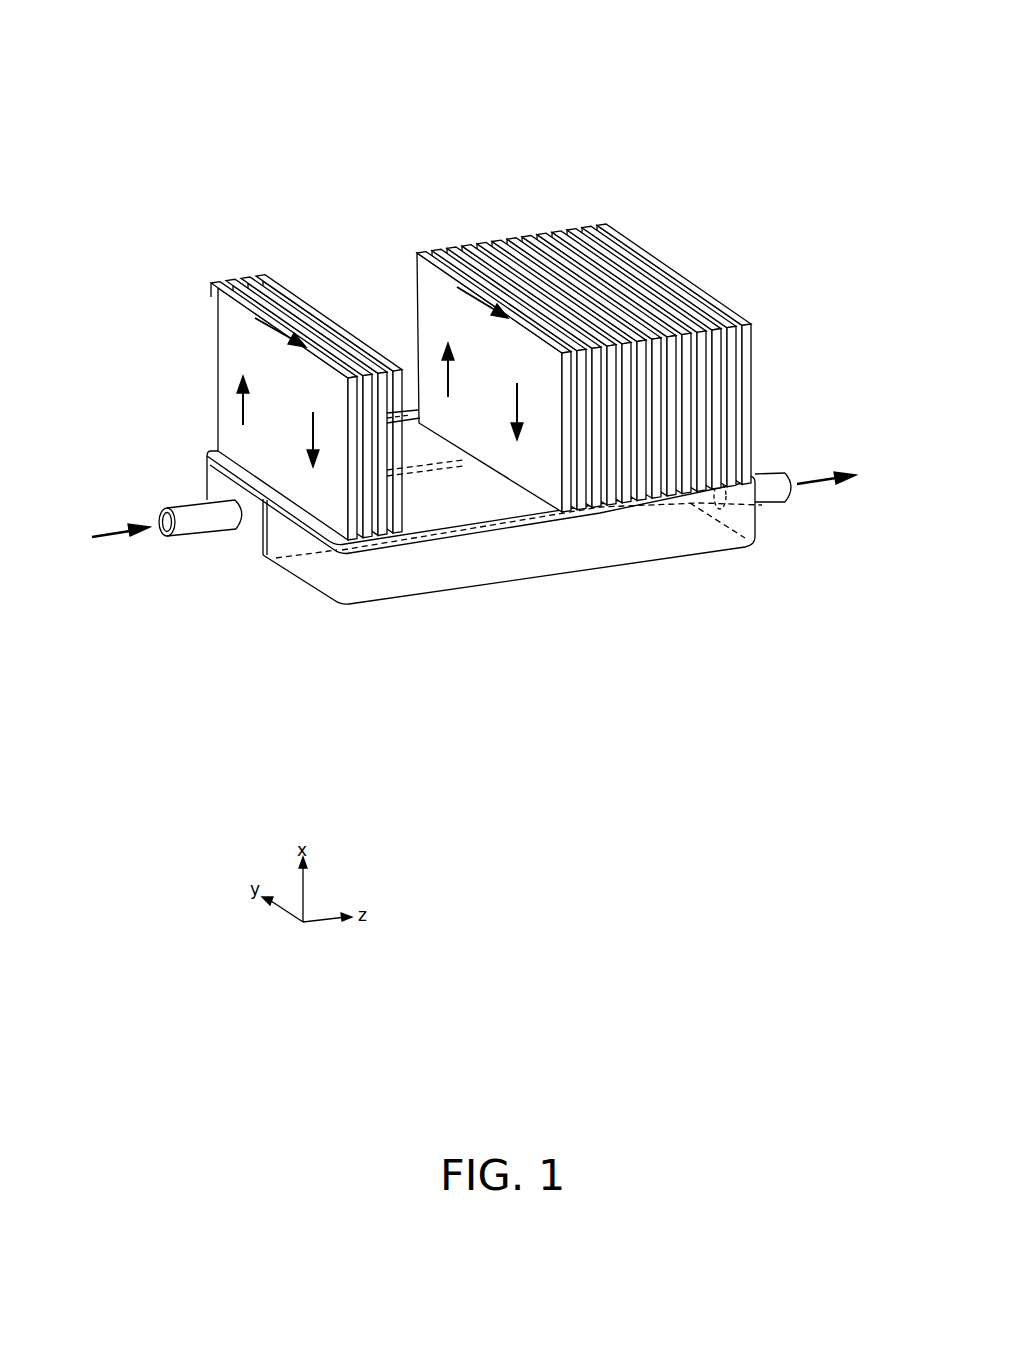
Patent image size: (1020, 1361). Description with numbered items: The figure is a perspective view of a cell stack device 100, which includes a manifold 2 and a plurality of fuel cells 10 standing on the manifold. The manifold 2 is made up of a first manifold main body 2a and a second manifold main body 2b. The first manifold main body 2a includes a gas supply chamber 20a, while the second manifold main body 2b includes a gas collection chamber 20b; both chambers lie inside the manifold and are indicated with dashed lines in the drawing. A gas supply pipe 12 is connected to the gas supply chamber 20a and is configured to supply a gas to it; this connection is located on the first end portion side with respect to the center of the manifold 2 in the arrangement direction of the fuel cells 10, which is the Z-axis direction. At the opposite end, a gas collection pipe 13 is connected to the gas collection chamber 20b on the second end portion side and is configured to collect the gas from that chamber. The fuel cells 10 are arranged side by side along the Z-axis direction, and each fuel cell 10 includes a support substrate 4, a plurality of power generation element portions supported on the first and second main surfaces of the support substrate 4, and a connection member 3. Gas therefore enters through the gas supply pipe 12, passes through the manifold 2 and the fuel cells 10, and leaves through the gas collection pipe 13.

The cell stack device 100 is at (474, 344).
The manifold 2 is at (434, 537).
The first manifold main body 2a is at (247, 531).
The second manifold main body 2b is at (312, 569).
The connection member 3 is at (237, 280).
The support substrate 4 is at (267, 373).
The fuel cells 10 is at (248, 373).
The gas supply pipe 12 is at (182, 510).
The gas collection pipe 13 is at (777, 498).
The gas supply chamber 20a is at (420, 452).
The gas collection chamber 20b is at (493, 498).